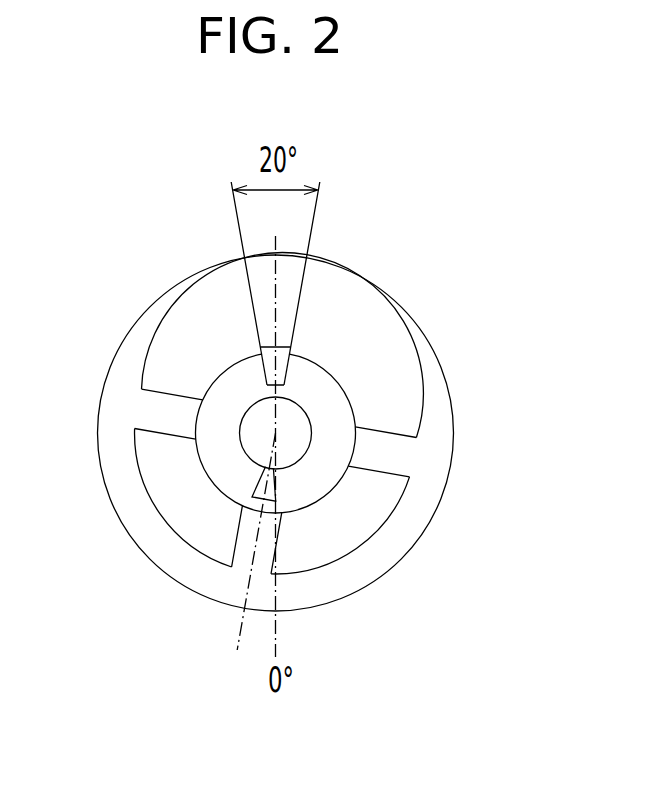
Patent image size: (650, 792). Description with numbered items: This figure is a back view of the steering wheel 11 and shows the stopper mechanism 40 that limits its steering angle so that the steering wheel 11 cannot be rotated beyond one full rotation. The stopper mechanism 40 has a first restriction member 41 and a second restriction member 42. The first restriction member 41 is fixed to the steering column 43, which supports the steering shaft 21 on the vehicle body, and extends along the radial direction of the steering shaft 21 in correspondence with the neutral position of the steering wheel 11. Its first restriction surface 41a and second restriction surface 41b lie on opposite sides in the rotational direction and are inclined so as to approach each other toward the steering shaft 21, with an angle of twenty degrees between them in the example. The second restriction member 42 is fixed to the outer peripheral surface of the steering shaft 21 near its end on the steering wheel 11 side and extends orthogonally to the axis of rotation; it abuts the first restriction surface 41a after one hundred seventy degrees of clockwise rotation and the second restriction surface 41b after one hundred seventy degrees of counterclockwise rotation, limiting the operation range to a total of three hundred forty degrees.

The steering wheel 11 is at (452, 397).
The steering shaft 21 is at (298, 464).
The stopper mechanism 40 is at (152, 230).
The first restriction member 41 is at (247, 314).
The first restriction surface 41a is at (264, 366).
The second restriction surface 41b is at (286, 366).
The second restriction member 42 is at (256, 478).
The steering column 43 is at (205, 467).